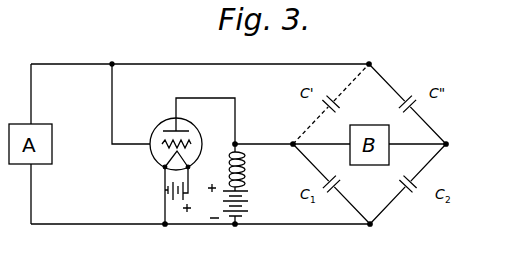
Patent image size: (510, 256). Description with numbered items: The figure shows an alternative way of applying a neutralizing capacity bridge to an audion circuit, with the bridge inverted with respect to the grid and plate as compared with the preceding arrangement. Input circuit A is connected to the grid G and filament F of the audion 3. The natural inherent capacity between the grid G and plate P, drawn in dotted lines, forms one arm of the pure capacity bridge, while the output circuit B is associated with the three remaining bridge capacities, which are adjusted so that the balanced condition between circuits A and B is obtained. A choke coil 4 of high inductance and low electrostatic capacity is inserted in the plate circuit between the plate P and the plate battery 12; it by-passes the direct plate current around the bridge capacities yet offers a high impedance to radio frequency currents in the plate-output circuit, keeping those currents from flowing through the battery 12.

The audion 3 is at (204, 134).
The choke coil 4 is at (248, 167).
The plate battery 12 is at (275, 210).